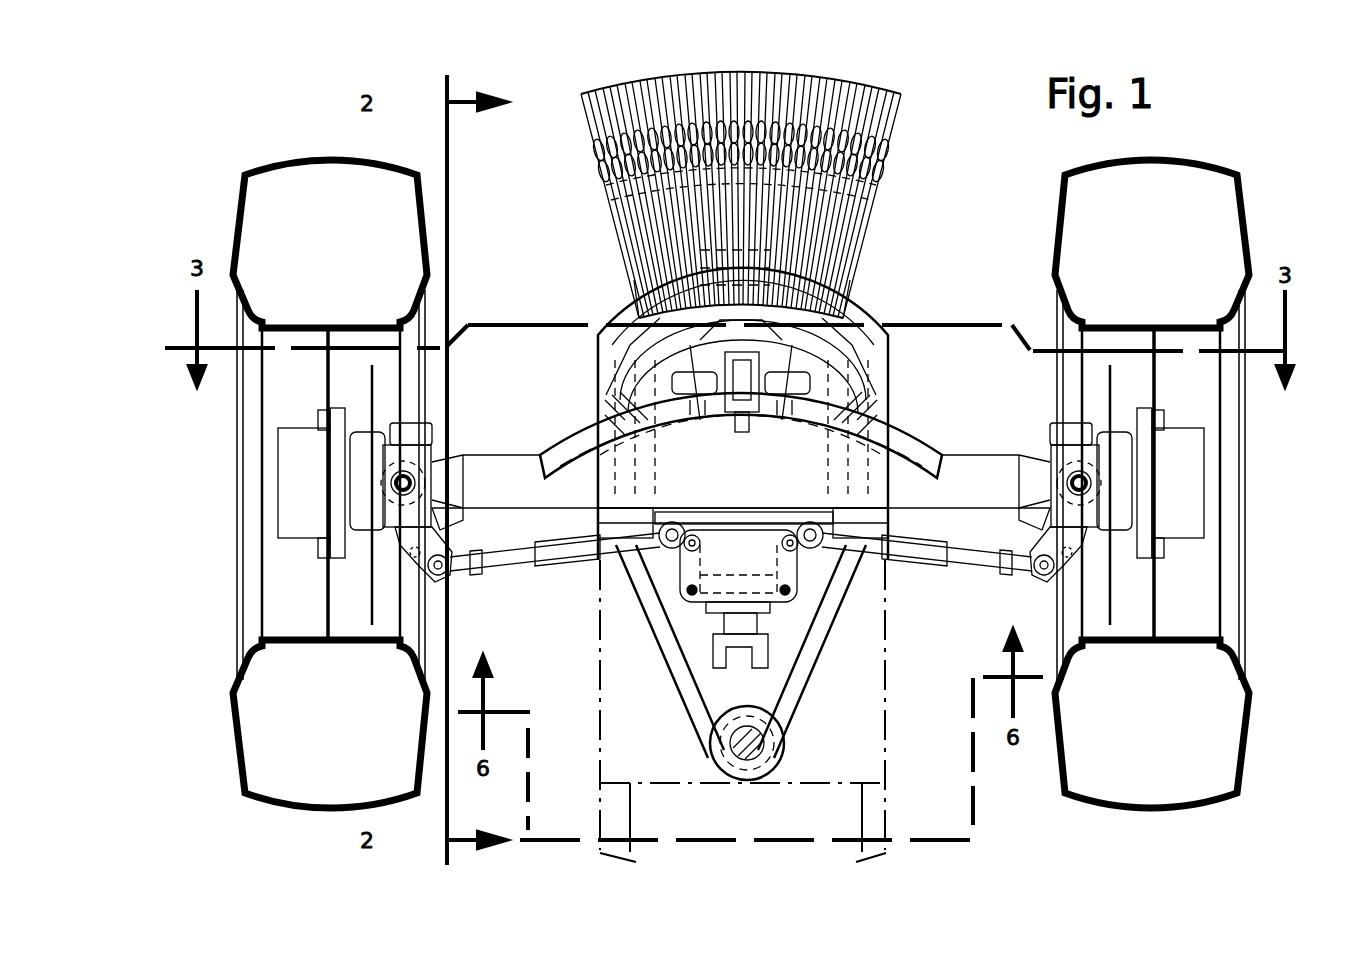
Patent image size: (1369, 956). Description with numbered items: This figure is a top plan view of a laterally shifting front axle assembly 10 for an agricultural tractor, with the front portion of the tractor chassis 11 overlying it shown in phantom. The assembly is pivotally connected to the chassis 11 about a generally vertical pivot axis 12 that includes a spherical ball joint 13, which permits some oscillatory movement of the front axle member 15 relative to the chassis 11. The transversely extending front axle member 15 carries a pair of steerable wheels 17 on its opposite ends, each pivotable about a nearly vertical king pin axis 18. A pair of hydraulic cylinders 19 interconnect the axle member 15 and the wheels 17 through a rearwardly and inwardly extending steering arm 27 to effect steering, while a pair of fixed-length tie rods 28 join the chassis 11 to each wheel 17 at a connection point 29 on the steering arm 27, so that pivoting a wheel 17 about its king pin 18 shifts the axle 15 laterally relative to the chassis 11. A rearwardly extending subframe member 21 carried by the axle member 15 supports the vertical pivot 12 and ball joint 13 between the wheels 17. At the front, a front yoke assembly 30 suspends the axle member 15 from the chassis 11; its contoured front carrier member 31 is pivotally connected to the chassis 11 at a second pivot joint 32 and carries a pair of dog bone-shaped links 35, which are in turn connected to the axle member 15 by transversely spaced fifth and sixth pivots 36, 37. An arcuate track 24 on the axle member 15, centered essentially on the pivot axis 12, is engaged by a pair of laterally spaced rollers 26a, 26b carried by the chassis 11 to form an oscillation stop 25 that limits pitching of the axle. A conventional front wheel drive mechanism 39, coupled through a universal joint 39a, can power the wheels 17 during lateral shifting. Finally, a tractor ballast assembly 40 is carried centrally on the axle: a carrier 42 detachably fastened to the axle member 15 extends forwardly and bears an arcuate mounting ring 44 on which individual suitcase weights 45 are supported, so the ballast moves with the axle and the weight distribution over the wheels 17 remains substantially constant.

The front axle assembly 10 is at (1245, 112).
The tractor chassis 11 is at (885, 822).
The vertical pivot axis 12 is at (750, 772).
The spherical ball joint 13 is at (772, 760).
The front axle member 15 is at (960, 470).
The steerable wheels 17 is at (272, 803).
The king pin axis 18 is at (392, 482).
The hydraulic cylinders 19 is at (548, 530).
The subframe member 21 is at (680, 692).
The arcuate track 24 is at (926, 432).
The oscillation stop 25 is at (952, 397).
The roller 26a is at (600, 396).
The roller 26b is at (896, 378).
The steering arm 27 is at (470, 518).
The tie rods 28 is at (550, 566).
The connection point 29 is at (430, 566).
The front yoke assembly 30 is at (872, 290).
The front carrier member 31 is at (632, 312).
The second pivot joint 32 is at (742, 418).
The dog bone-shaped links 35 is at (858, 316).
The fifth pivot 36 is at (668, 387).
The sixth pivot 37 is at (809, 387).
The front wheel drive mechanism 39 is at (680, 600).
The universal joint 39a is at (712, 652).
The tractor ballast assembly 40 is at (576, 74).
The carrier 42 is at (858, 262).
The arcuate mounting ring 44 is at (642, 300).
The suitcase weights 45 is at (742, 72).